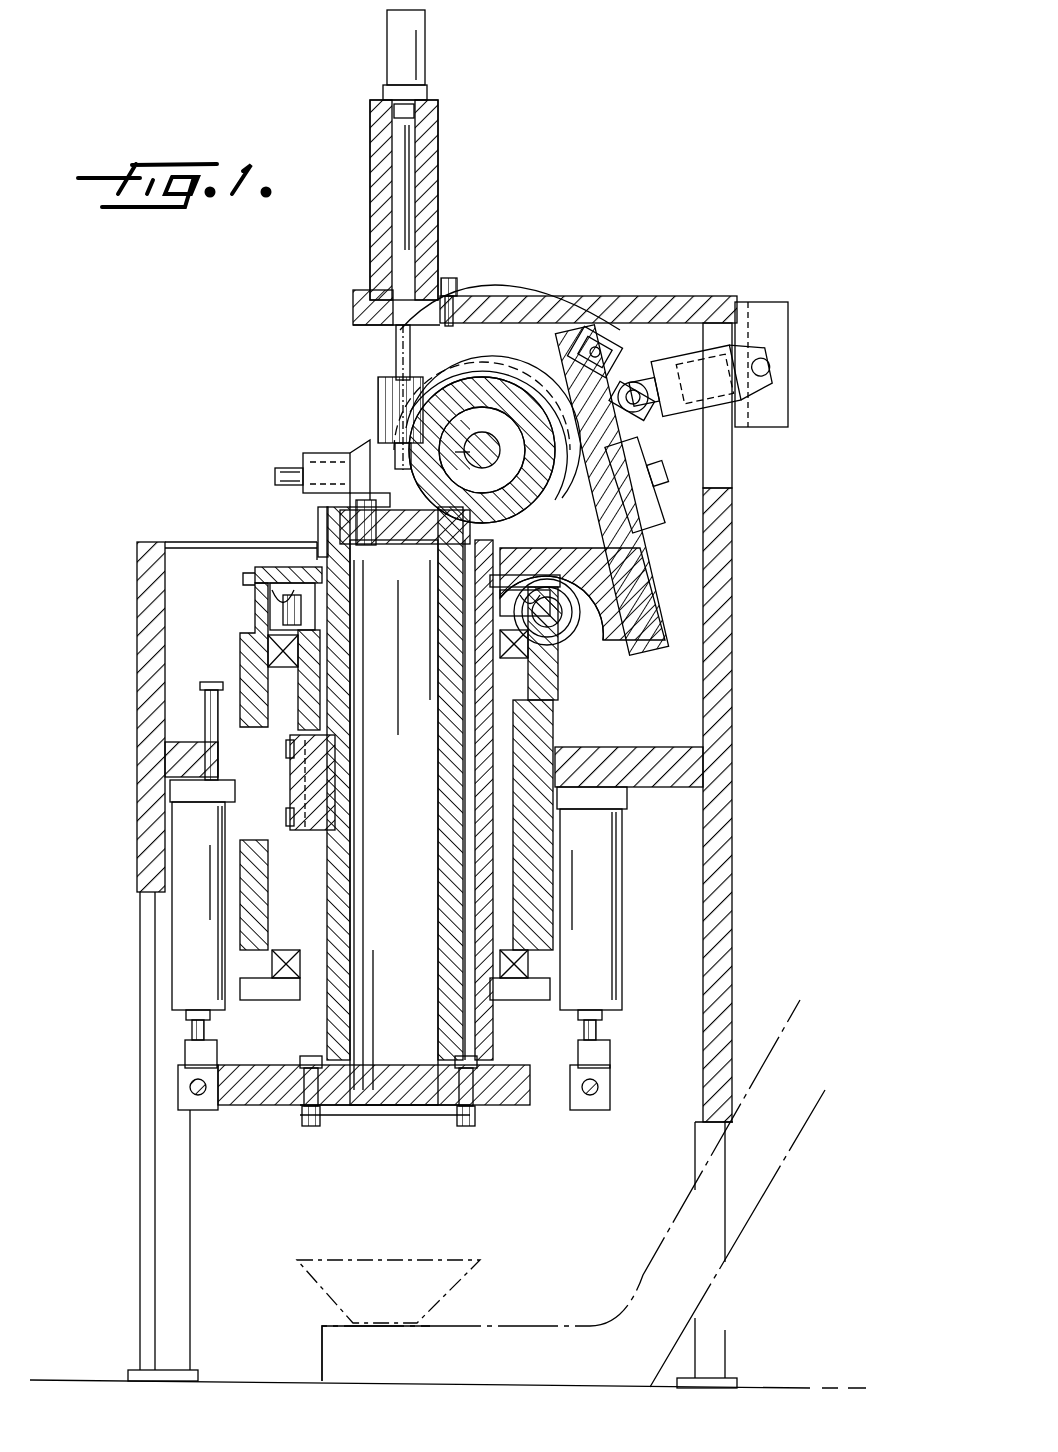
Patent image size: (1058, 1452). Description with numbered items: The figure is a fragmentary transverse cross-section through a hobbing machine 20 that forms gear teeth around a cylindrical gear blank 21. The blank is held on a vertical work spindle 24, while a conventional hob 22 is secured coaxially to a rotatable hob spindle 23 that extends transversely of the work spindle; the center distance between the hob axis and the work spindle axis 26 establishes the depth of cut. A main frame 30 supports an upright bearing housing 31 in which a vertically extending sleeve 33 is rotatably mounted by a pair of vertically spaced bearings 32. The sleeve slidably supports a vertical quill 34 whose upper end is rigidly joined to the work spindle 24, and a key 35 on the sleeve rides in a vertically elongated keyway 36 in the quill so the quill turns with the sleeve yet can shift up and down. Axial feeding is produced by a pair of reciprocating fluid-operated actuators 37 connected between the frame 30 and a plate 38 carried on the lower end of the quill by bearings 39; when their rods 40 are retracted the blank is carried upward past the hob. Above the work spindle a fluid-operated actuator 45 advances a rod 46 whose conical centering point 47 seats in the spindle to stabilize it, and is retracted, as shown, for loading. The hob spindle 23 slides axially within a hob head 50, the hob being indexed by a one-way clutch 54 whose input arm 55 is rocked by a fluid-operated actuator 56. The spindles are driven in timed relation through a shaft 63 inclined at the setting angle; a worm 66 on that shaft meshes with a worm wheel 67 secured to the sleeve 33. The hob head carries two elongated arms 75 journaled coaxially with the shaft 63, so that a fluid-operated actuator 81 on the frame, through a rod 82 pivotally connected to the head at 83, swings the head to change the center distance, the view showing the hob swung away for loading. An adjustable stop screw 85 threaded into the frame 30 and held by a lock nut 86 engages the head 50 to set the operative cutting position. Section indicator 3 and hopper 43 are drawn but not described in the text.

The section line 3- 3 is at (436, 240).
The hobbing machine 20 is at (528, 272).
The gear blank 21 is at (380, 410).
The hob 22 is at (395, 360).
The hob spindle 23 is at (430, 560).
The work spindle 24 is at (365, 490).
The axis of the work spindle 26 is at (335, 550).
The main frame 30 is at (742, 610).
The upright bearing housing 31 is at (540, 890).
The bearings 32 is at (540, 972).
The sleeve 33 is at (470, 792).
The quill 34 is at (440, 855).
The key 35 is at (330, 818).
The keyway 36 is at (340, 690).
The fluid-operated actuators 37 is at (180, 962).
The plate 38 is at (275, 1104).
The bearings 39 is at (345, 1105).
The rods 40 is at (185, 1050).
The discharge hopper 43 is at (330, 1260).
The fluid-operated actuator 45 is at (426, 50).
The rod 46 is at (410, 155).
The conical centering point 47 is at (348, 318).
The hob head 50 is at (505, 335).
The one-way clutch 54 is at (650, 505).
The arm 55 is at (598, 370).
The fluid-operated actuator 56 is at (600, 332).
The shaft 63 is at (590, 645).
The worm 66 is at (600, 590).
The worm wheel 67 is at (270, 610).
The elongated arms 75 is at (500, 325).
The fluid-operated actuator 81 is at (760, 318).
The rod 82 is at (683, 330).
The pivot connection 83 is at (626, 408).
The screw 85 is at (350, 470).
The lock nut 86 is at (295, 465).